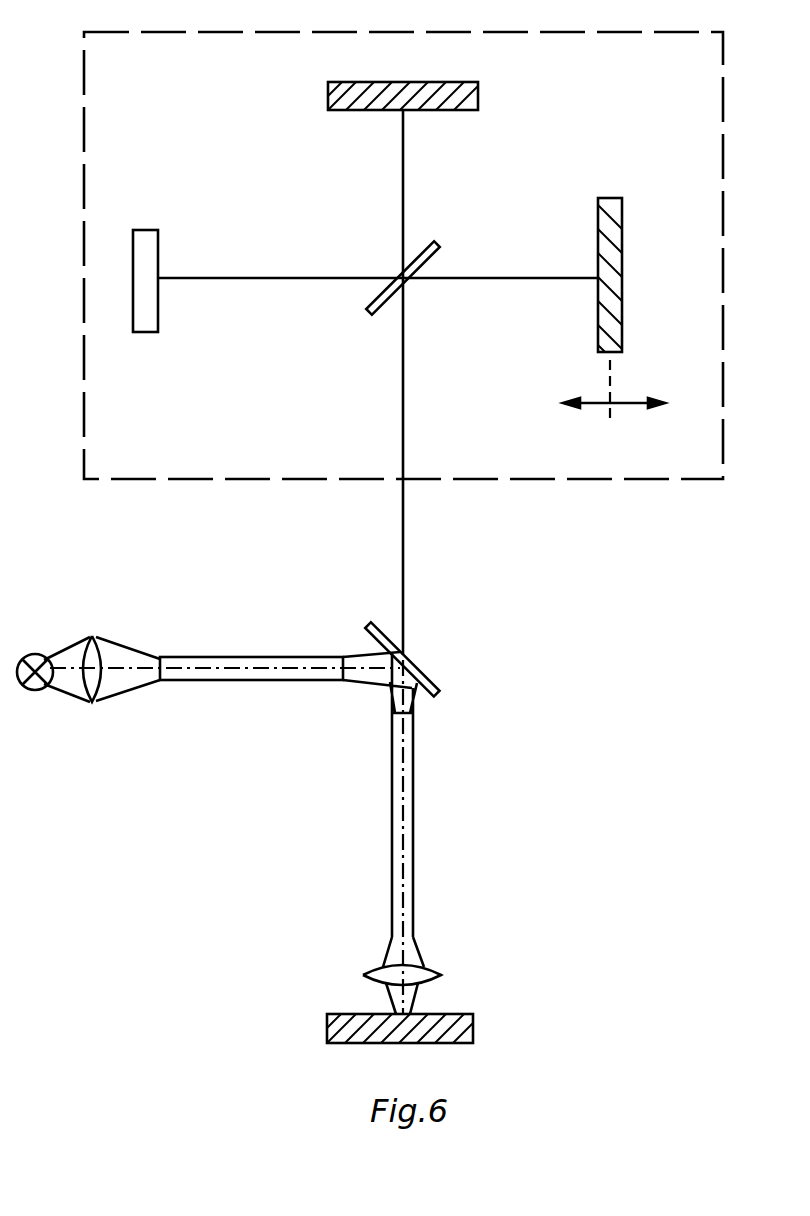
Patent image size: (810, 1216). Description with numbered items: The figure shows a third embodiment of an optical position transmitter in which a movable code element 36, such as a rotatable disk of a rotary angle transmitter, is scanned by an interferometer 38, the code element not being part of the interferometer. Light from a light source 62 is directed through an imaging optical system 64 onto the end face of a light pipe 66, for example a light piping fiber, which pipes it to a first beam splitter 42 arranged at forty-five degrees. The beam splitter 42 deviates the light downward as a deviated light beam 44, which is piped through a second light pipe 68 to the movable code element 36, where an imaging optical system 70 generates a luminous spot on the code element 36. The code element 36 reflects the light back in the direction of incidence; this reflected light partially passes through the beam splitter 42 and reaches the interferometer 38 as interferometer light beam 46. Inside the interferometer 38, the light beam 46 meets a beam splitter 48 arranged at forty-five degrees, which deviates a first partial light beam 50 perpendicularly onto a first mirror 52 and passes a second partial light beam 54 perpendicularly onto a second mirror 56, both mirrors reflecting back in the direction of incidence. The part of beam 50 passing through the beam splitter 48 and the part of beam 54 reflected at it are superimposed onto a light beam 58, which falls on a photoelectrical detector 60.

The movable code element 36 is at (328, 1013).
The interferometer 38 is at (603, 480).
The first beam splitter 42 is at (410, 655).
The deviated light beam 44 is at (414, 700).
The interferometer light beam 46 is at (403, 567).
The beam splitter 48 is at (437, 243).
The first partial light beam 50 is at (528, 277).
The first mirror 52 is at (613, 200).
The second partial light beam 54 is at (403, 185).
The second mirror 56 is at (470, 95).
The light beam 58 is at (293, 278).
The photoelectrical detector 60 is at (145, 317).
The light source 62 is at (30, 690).
The imaging optical system 64 is at (100, 688).
The light pipe 66 is at (238, 676).
The light pipe 68 is at (413, 872).
The imaging optical system 70 is at (422, 972).